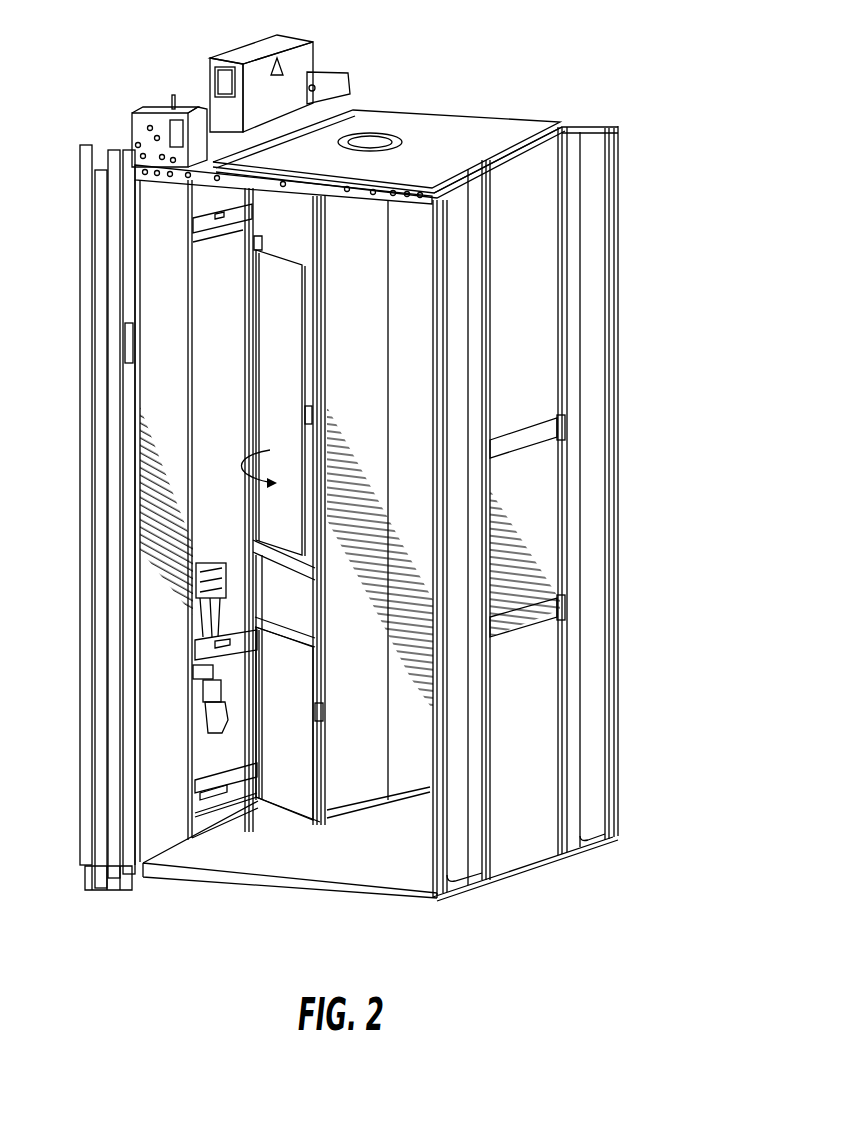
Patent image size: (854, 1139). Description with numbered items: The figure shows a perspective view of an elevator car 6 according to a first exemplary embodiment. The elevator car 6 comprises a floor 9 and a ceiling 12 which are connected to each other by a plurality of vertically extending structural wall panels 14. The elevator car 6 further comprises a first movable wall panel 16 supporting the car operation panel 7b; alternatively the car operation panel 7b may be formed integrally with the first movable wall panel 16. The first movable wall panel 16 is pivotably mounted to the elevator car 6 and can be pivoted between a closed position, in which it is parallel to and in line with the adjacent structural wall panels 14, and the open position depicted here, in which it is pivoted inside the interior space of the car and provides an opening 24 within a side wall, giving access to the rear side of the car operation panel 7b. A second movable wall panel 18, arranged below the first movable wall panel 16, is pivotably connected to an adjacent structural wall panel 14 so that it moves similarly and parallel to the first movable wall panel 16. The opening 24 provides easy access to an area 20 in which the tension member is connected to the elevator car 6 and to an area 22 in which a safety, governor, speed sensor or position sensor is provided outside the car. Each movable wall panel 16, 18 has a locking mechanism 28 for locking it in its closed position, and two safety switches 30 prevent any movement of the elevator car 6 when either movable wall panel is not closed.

The elevator car 6 is at (636, 122).
The floor 9 is at (210, 855).
The ceiling 12 is at (458, 136).
The structural wall panel 14 is at (170, 261).
The first movable wall panel 16 is at (306, 220).
The second movable wall panel 18 is at (294, 741).
The area 20 is at (202, 555).
The area 22 is at (332, 53).
The opening 24 is at (226, 336).
The locking mechanism 28 is at (306, 415).
The safety switch 30 is at (217, 220).
The car operation panel 7b is at (284, 344).